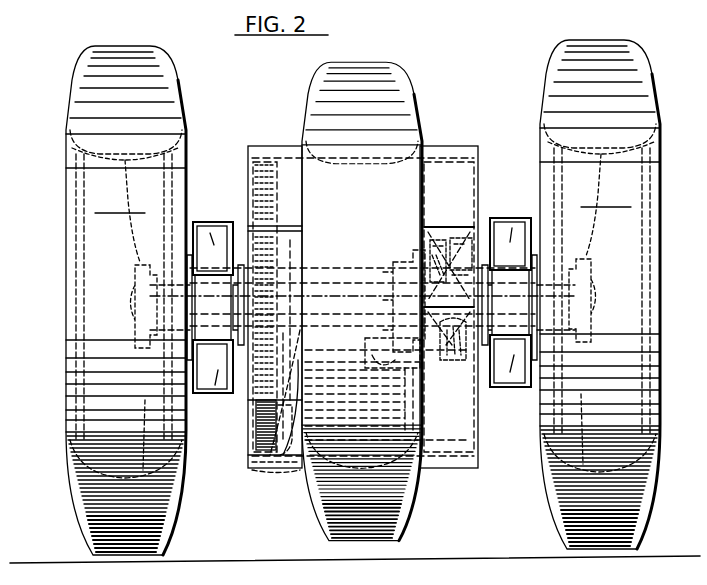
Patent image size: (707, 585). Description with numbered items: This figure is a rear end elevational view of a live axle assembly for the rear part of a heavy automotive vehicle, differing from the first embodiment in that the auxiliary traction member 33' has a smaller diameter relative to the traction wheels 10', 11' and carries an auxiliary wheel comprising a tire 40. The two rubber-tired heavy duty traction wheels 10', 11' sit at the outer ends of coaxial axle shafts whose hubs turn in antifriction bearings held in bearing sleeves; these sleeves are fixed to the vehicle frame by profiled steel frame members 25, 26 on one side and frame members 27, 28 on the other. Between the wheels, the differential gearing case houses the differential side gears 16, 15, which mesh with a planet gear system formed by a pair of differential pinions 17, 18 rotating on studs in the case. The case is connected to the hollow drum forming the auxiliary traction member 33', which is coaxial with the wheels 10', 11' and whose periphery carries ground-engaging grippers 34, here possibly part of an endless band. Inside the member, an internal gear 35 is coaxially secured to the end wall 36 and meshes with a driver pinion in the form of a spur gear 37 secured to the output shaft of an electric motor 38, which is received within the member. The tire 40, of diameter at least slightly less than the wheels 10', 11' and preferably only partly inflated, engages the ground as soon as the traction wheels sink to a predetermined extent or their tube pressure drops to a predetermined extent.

The traction wheel 10' is at (600, 280).
The traction wheel 11' is at (126, 283).
The tire 40 is at (394, 78).
The differential side gear 15 is at (412, 262).
The differential side gear 16 is at (458, 238).
The differential pinion 17 is at (437, 240).
The differential pinion 18 is at (447, 362).
The frame member 25 is at (511, 218).
The frame member 26 is at (512, 387).
The frame member 27 is at (220, 222).
The frame member 28 is at (218, 393).
The auxiliary traction member 33' is at (449, 281).
The grippers 34 is at (270, 150).
The internal gear 35 is at (260, 198).
The end wall 36 is at (262, 412).
The spur gear 37 is at (258, 450).
The electric motor 38 is at (268, 480).